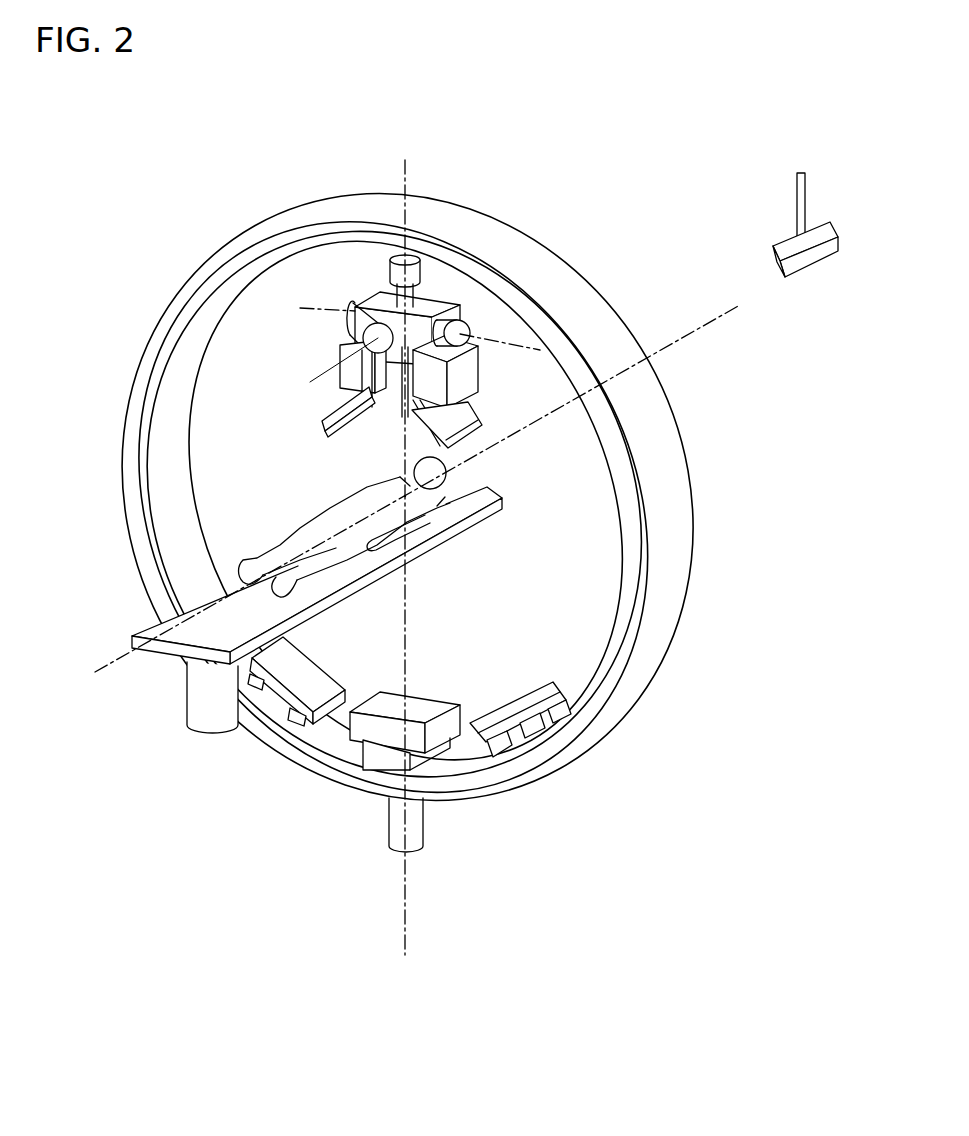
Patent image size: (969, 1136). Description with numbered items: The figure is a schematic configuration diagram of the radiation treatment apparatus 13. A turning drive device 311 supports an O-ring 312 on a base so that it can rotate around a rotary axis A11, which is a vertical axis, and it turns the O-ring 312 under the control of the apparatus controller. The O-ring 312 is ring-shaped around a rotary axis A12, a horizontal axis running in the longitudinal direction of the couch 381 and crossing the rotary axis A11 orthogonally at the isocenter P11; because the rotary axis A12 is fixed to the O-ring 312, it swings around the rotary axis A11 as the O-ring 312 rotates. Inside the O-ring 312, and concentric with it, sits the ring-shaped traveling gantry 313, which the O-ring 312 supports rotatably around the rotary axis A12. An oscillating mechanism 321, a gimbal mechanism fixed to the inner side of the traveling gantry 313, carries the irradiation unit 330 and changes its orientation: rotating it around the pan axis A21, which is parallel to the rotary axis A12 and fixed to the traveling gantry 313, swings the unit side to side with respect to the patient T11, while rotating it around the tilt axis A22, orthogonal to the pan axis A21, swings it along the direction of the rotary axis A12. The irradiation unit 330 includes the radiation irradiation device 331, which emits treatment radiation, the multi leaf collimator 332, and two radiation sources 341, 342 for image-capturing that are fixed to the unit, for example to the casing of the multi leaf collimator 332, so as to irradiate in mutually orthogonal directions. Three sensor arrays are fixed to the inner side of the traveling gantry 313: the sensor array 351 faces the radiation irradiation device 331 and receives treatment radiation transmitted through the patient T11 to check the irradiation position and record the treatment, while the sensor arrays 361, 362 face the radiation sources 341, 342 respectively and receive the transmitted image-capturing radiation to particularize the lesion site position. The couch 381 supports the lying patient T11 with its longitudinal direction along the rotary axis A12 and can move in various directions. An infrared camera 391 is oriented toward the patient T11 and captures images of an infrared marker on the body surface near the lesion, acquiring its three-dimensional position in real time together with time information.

The radiation treatment apparatus 13 is at (621, 172).
The turning drive device 311 is at (388, 820).
The O-ring 312 is at (660, 412).
The traveling gantry 313 is at (617, 512).
The oscillating mechanism 321 is at (375, 300).
The irradiation unit 330 is at (325, 334).
The radiation irradiation device 331 is at (395, 271).
The multi leaf collimator 332 is at (463, 377).
The radiation source for image-capturing 341 is at (437, 443).
The radiation source for image-capturing 342 is at (338, 428).
The sensor array 351 is at (418, 705).
The sensor array 361 is at (317, 678).
The sensor array 362 is at (523, 690).
The couch 381 is at (147, 625).
The infrared camera 391 is at (808, 262).
The rotary axis A11 is at (407, 885).
The rotary axis A12 is at (100, 670).
The pan axis A21 is at (462, 292).
The tilt axis A22 is at (308, 307).
The isocenter P11 is at (407, 498).
The patient T11 is at (283, 548).